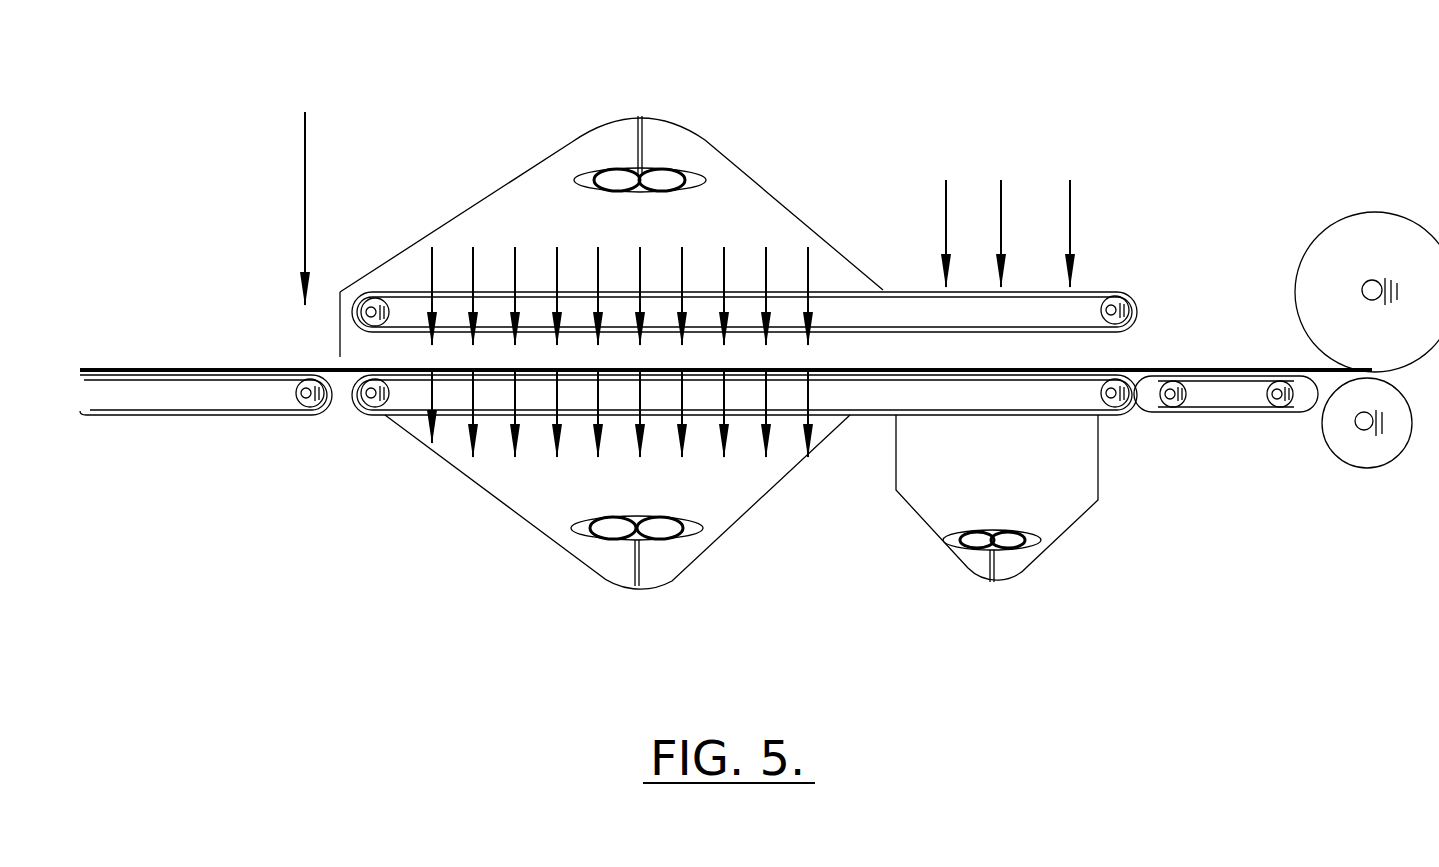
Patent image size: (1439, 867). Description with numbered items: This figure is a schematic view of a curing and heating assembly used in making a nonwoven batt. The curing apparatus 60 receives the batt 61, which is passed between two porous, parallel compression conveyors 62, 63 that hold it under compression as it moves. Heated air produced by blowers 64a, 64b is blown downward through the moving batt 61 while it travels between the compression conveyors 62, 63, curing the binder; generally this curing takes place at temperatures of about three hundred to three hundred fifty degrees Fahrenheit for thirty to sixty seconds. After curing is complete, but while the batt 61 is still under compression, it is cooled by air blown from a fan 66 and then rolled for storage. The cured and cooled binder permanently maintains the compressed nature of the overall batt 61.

The curing apparatus 60 is at (402, 512).
The batt 61 is at (162, 368).
The compression conveyor 62 is at (407, 292).
The compression conveyor 63 is at (383, 417).
The blower 64a is at (582, 172).
The blower 64b is at (697, 538).
The fan 66 is at (1035, 543).